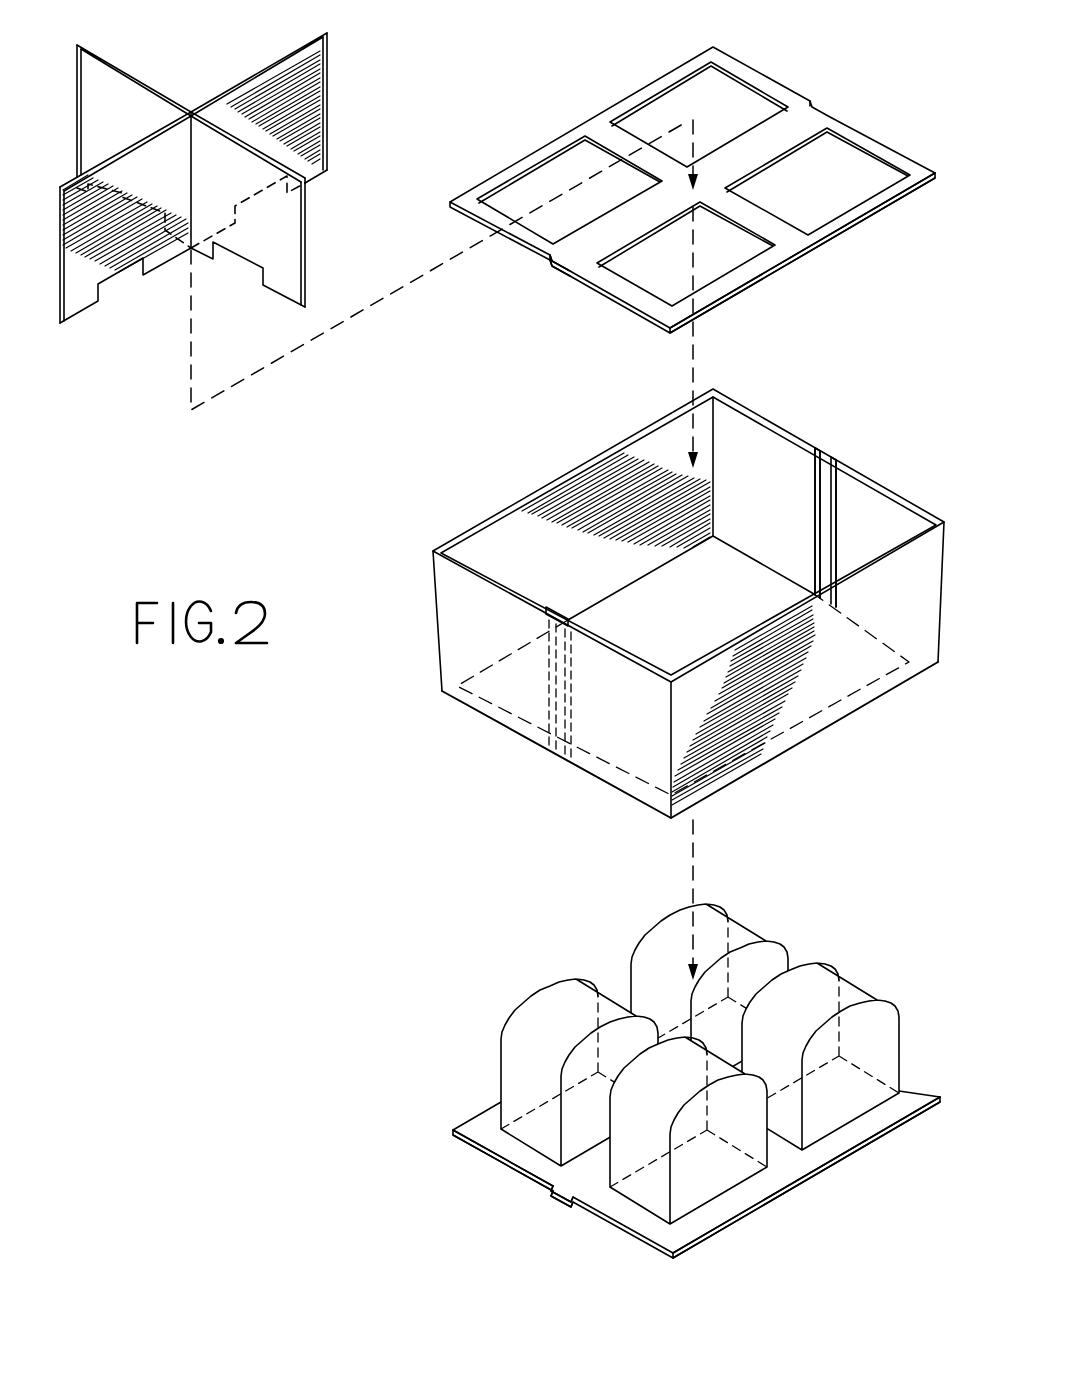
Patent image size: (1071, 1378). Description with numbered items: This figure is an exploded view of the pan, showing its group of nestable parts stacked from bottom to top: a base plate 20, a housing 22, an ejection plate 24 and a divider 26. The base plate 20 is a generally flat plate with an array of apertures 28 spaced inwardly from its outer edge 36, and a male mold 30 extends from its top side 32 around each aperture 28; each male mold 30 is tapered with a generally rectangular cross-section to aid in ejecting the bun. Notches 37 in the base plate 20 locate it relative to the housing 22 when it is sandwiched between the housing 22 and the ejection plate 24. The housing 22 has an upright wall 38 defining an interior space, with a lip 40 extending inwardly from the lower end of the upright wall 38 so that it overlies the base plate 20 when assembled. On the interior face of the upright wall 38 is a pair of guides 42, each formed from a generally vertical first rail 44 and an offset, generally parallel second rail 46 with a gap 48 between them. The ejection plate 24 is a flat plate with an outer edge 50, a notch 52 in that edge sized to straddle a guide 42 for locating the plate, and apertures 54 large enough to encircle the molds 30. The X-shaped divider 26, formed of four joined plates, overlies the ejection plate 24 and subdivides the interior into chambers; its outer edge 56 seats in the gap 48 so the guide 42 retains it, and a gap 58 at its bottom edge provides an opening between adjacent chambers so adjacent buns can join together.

The base plate 20 is at (667, 1081).
The housing 22 is at (669, 600).
The ejection plate 24 is at (692, 182).
The divider 26 is at (178, 197).
The aperture 28 is at (710, 1185).
The male mold 30 is at (888, 1027).
The top side 32 is at (507, 1145).
The outer edge 36 is at (852, 1148).
The notches 37 is at (565, 1192).
The upright wall 38 is at (778, 453).
The lip 40 is at (649, 582).
The guide 42 is at (831, 455).
The first rail 44 is at (813, 527).
The second rail 46 is at (831, 551).
The gap 48 is at (822, 500).
The outer edge 50 is at (848, 225).
The notch 52 is at (560, 265).
The aperture 54 is at (747, 100).
The outer edge 56 is at (58, 213).
The gap 58 is at (250, 267).